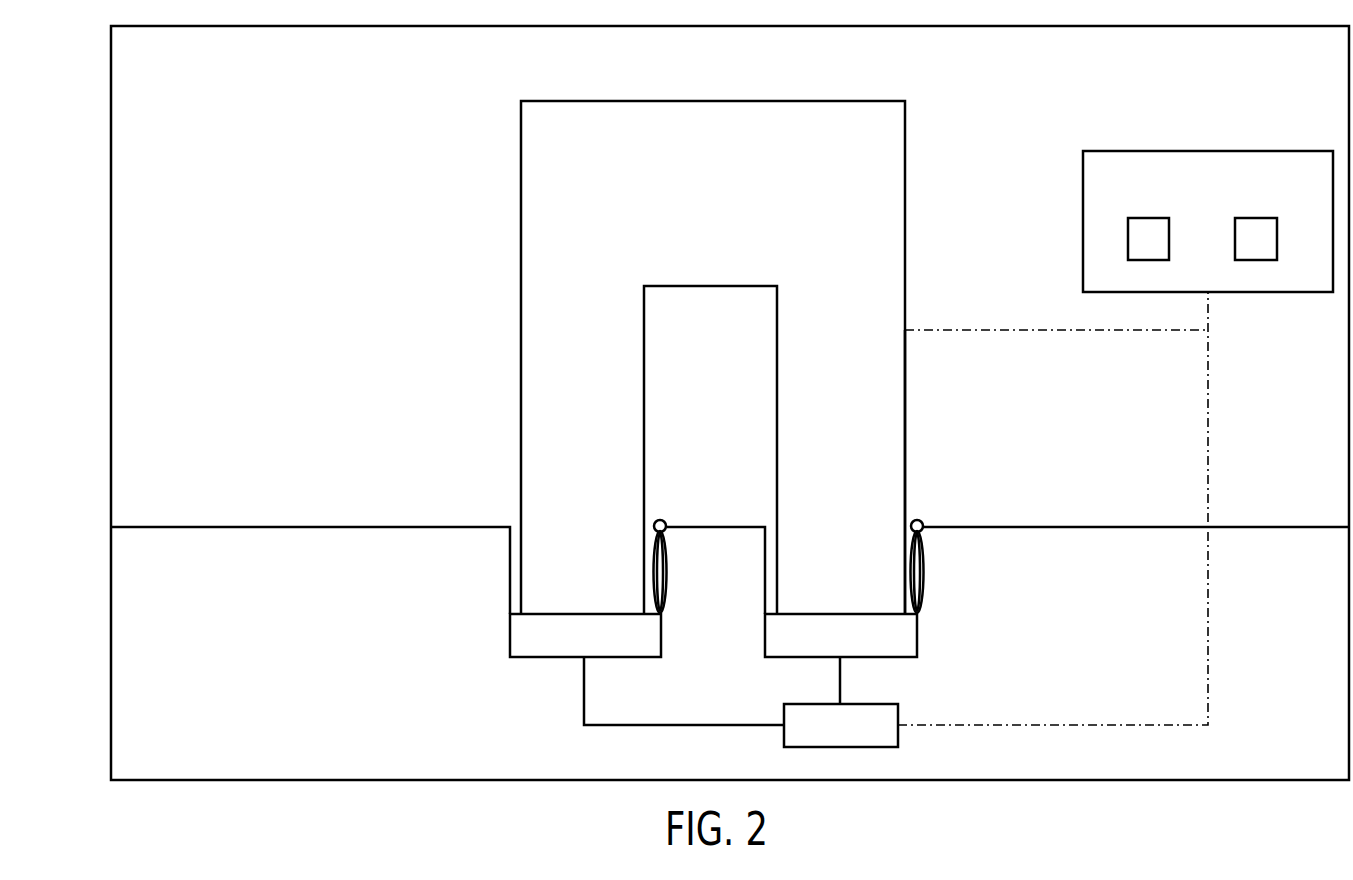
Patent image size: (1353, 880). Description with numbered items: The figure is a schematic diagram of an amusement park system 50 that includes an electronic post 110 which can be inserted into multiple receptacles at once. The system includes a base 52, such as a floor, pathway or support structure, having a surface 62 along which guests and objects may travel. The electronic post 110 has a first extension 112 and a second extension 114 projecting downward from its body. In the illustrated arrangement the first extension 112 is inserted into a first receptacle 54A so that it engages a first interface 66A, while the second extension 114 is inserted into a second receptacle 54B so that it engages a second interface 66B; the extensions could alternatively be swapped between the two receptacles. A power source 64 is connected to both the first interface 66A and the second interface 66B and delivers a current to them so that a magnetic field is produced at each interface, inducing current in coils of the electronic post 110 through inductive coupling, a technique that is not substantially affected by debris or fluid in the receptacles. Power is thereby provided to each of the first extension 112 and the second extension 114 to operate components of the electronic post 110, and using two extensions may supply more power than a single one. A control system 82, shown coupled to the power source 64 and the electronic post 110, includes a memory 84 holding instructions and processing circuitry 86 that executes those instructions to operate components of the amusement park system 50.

The amusement park system 50 is at (110, 177).
The base 52 is at (300, 636).
The first receptacle 54A is at (493, 488).
The second receptacle 54B is at (750, 488).
The surface 62 is at (310, 530).
The power source 64 is at (898, 712).
The first interface 66A is at (510, 636).
The second interface 66B is at (765, 636).
The control system 82 is at (1083, 166).
The memory 84 is at (1169, 238).
The processing circuitry 86 is at (1277, 238).
The electronic post 110 is at (521, 163).
The first extension 112 is at (521, 357).
The second extension 114 is at (905, 355).